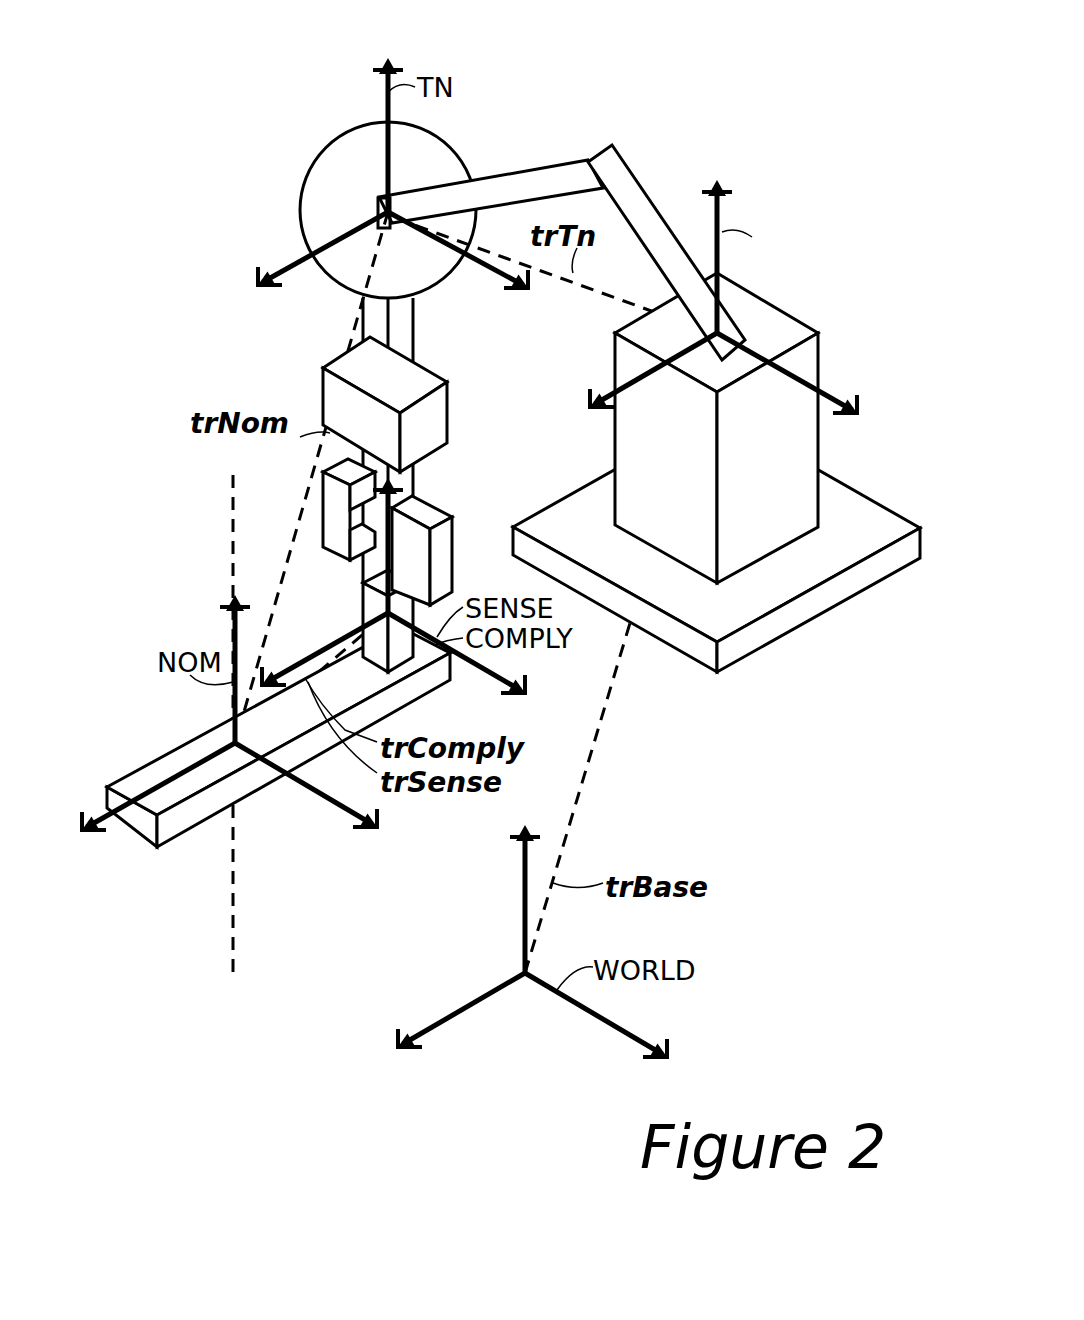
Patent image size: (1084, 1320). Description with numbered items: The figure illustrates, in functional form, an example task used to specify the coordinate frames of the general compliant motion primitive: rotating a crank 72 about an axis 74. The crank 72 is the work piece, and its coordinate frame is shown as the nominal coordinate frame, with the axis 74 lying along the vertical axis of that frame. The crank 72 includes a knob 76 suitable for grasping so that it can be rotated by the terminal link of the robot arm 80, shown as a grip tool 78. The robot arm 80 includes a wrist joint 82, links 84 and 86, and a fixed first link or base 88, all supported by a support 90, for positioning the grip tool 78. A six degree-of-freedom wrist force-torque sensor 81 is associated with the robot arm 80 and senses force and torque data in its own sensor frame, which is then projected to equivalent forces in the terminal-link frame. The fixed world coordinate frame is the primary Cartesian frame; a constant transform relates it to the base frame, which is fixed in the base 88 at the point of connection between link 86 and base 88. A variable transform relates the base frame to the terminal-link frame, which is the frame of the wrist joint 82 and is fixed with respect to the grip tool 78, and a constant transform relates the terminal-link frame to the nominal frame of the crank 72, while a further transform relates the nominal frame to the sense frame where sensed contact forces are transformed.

The crank 72 is at (135, 838).
The axis 74 is at (236, 857).
The knob 76 is at (362, 588).
The grip tool 78 is at (452, 547).
The robot arm 80 is at (572, 473).
The force-torque sensor 81 is at (449, 432).
The wrist joint 82 is at (300, 203).
The link 84 is at (553, 163).
The link 86 is at (667, 217).
The base 88 is at (818, 420).
The support 90 is at (810, 620).